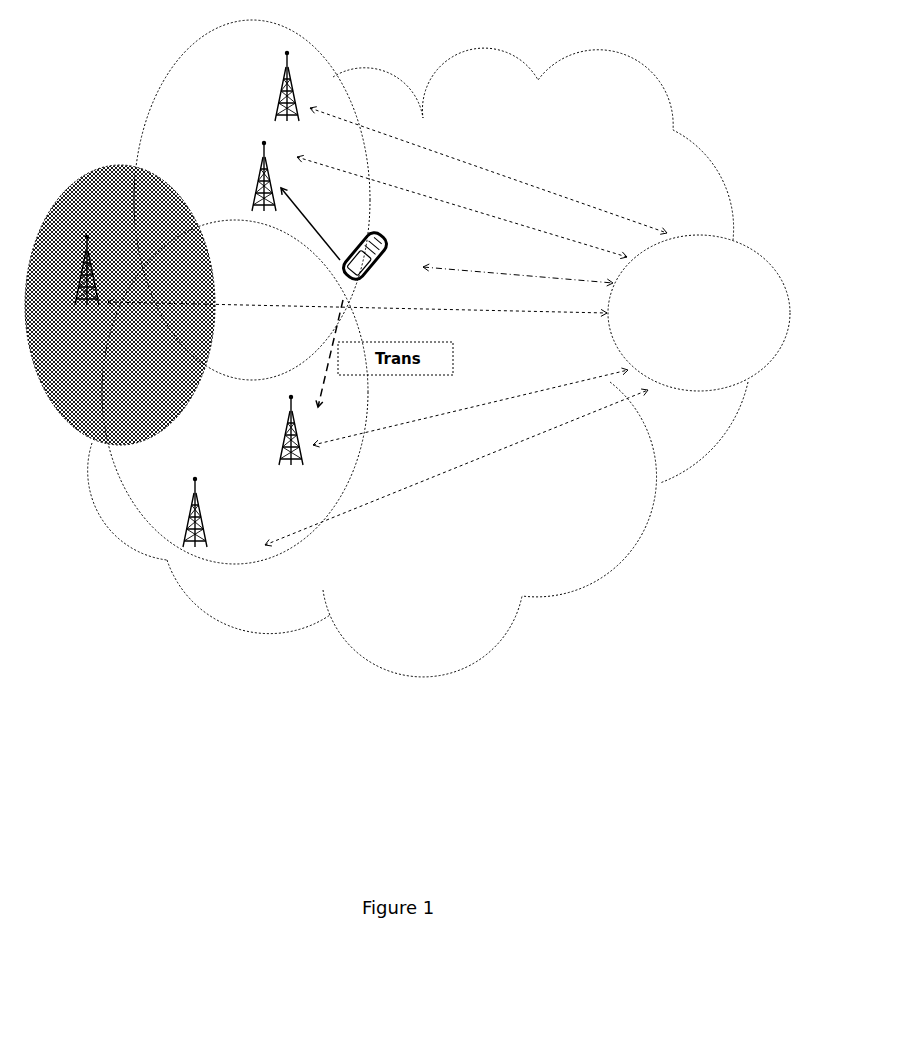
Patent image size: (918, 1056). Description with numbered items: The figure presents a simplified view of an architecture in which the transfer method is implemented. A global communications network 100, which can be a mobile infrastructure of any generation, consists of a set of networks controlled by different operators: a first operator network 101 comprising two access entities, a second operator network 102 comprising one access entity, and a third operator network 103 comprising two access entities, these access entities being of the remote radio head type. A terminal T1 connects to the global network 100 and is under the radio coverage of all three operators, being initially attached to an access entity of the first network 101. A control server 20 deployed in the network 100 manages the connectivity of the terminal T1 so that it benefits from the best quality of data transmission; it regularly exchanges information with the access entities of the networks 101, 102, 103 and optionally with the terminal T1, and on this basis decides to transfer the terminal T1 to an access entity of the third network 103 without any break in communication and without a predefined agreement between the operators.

The global communications network 100 is at (418, 362).
The network controlled by operator MNO1 101 is at (252, 200).
The network controlled by operator MNO2 102 is at (120, 305).
The network controlled by operator MNO3 103 is at (235, 392).
The control server 20 is at (699, 313).
The terminal T1 is at (385, 256).